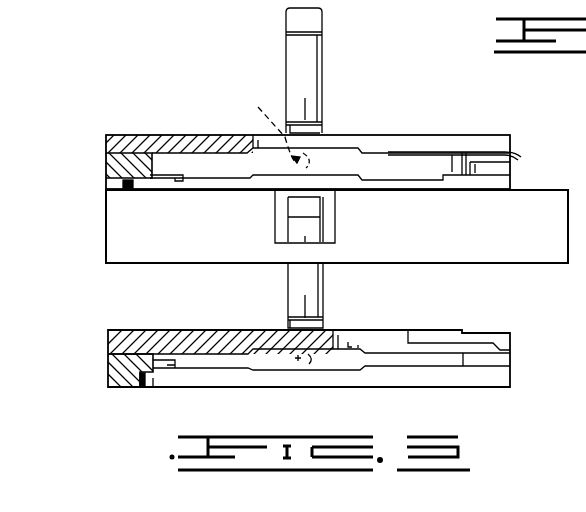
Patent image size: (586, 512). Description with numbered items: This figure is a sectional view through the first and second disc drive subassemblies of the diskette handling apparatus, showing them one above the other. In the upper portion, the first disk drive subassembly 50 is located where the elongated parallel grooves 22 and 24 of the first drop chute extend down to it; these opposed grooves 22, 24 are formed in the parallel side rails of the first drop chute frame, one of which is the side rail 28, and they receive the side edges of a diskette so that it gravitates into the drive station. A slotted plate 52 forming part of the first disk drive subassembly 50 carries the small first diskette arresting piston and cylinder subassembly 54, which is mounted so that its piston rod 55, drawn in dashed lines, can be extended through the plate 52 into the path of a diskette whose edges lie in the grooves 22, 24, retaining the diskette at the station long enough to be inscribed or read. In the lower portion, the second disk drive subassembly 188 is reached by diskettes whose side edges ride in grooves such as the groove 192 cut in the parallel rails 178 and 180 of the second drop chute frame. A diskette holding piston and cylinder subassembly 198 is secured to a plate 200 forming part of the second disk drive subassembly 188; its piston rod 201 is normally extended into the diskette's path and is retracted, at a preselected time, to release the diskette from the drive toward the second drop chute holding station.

The first disk drive subassembly 50 is at (127, 119).
The slotted plate 52 is at (203, 134).
The first diskette arresting piston and cylinder subassembly 54 is at (297, 47).
The piston rod 55 is at (270, 133).
The groove 22 is at (452, 165).
The side rail 28 is at (118, 178).
The groove 24 is at (180, 178).
The diskette holding piston and cylinder subassembly 198 is at (326, 292).
The plate 200 is at (205, 338).
The second disk drive subassembly 188 is at (457, 321).
The rail 180 is at (108, 373).
The rail 178 is at (505, 370).
The groove 192 is at (455, 357).
The piston rod 201 is at (292, 362).